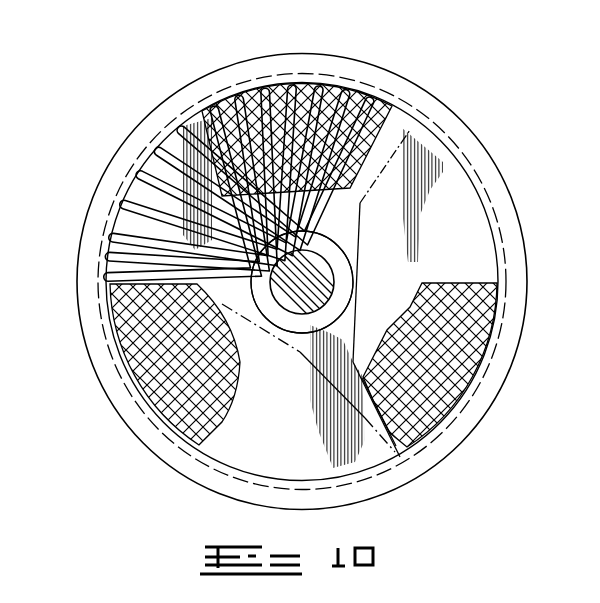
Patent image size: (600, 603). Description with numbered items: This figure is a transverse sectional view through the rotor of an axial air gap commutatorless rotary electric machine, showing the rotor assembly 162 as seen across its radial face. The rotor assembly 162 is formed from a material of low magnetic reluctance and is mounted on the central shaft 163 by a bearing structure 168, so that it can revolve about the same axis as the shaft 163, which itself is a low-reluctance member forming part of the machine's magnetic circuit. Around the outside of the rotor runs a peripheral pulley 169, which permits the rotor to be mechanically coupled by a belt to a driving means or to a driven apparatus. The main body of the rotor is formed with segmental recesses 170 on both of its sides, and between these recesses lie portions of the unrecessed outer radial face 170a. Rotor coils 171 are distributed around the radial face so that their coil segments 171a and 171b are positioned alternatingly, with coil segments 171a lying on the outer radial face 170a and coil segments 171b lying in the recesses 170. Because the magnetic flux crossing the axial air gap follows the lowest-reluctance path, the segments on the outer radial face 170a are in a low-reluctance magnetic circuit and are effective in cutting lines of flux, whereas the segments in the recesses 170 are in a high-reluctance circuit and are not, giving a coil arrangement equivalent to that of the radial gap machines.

The rotor assembly 162 is at (138, 108).
The shaft 163 is at (318, 267).
The bearing structure 168 is at (258, 275).
The peripheral pulley 169 is at (408, 88).
The segmental recesses 170 is at (123, 284).
The outer radial face 170a is at (470, 245).
The rotor coils 171 is at (140, 357).
The coil segments 171a is at (143, 187).
The coil segments 171b is at (320, 93).